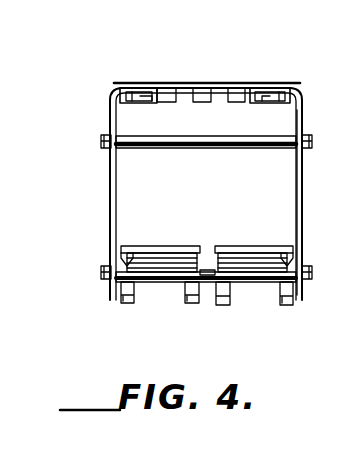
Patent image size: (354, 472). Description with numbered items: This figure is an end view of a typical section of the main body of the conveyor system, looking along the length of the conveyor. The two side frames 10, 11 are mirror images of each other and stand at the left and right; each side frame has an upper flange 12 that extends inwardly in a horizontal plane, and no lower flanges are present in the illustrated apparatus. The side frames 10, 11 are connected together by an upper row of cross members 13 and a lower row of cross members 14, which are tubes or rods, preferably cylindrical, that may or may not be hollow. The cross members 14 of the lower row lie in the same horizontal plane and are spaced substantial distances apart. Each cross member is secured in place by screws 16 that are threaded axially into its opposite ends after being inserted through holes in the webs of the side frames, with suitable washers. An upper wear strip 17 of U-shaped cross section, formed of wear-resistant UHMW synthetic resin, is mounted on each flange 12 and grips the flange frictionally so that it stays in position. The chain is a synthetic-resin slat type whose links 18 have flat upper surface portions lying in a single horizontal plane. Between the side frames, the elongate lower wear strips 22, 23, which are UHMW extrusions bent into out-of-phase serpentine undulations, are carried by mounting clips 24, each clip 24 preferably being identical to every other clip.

The side frame 10 is at (110, 204).
The side frame 11 is at (302, 214).
The upper flange 12 is at (134, 90).
The upper cross member 13 is at (188, 148).
The lower cross member 14 is at (170, 282).
The screw 16 is at (100, 143).
The upper wear strip 17 is at (152, 106).
The chain link 18 is at (200, 83).
The lower wear strip 22 is at (134, 246).
The lower wear strip 23 is at (260, 246).
The mounting clip 24 is at (127, 303).